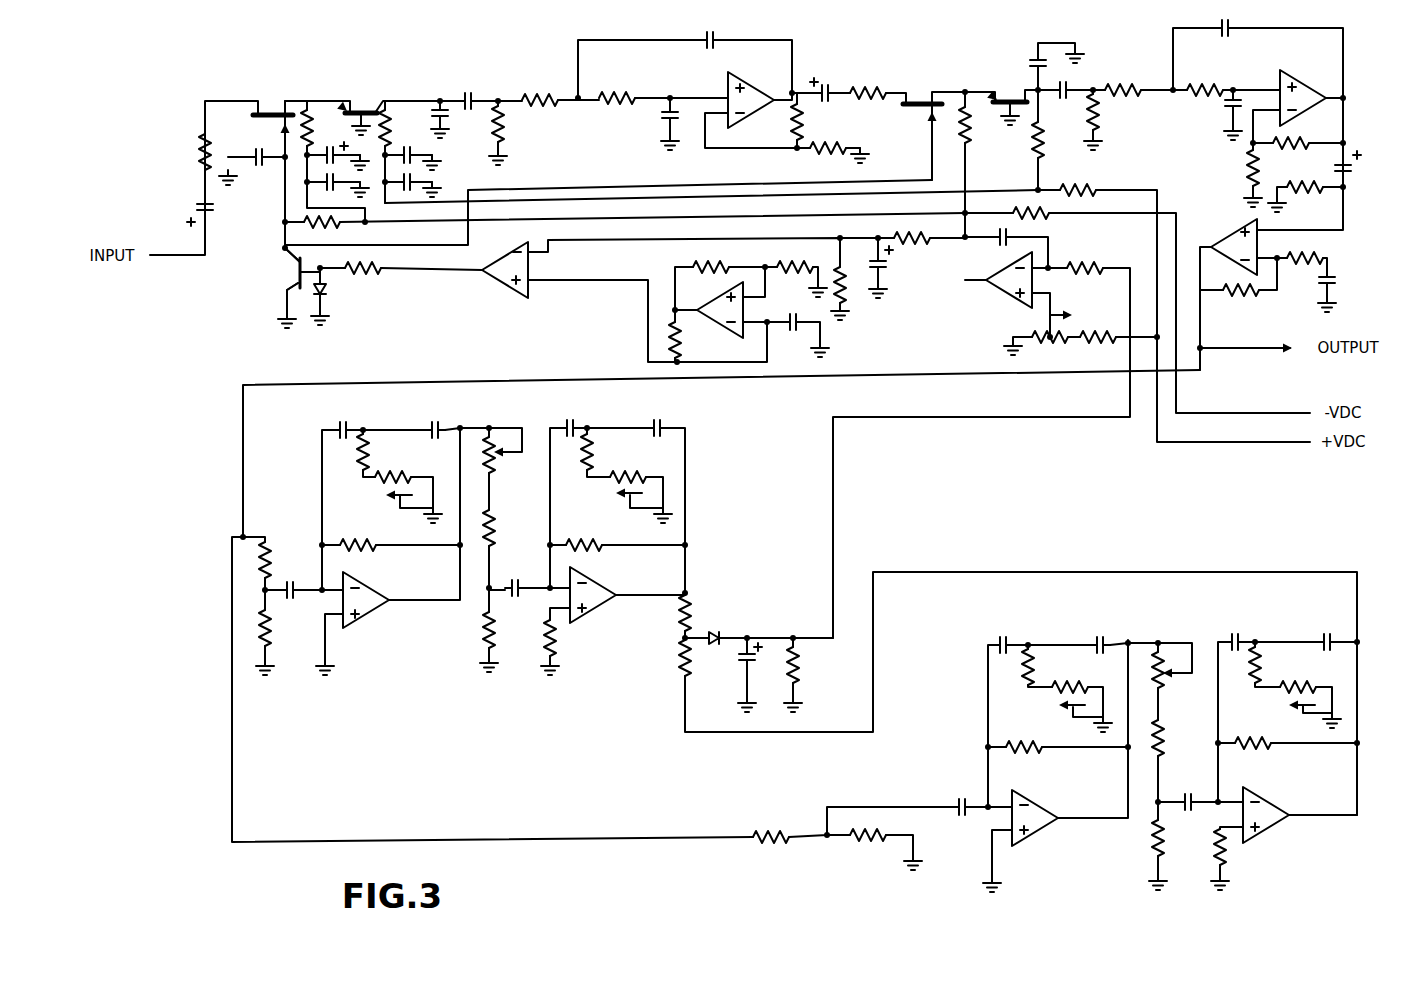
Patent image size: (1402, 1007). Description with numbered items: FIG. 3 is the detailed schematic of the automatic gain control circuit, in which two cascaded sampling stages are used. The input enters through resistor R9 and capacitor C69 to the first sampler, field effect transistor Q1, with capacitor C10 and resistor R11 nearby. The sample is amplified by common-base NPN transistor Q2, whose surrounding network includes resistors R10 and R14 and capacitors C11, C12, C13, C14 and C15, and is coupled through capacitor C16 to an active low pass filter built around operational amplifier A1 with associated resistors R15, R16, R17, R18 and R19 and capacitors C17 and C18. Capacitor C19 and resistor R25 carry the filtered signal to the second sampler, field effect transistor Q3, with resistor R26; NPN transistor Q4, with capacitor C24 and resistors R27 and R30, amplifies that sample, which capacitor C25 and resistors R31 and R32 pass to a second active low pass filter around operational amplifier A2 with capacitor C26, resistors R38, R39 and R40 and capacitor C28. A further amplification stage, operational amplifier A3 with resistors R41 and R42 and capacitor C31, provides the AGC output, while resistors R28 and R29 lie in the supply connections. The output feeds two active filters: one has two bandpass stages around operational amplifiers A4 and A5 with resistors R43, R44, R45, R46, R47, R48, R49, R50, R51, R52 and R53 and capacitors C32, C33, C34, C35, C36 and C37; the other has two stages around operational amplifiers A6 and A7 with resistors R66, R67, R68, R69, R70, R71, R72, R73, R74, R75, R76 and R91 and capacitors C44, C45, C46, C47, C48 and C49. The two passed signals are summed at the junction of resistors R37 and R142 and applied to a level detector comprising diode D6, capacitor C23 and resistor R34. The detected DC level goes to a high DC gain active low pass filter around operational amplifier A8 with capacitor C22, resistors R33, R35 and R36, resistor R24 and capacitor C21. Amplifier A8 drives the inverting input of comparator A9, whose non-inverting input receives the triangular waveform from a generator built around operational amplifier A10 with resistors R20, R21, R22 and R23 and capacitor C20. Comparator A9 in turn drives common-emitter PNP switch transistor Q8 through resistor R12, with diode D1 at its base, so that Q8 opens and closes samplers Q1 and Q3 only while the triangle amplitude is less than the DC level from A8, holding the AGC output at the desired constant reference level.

The resistor R9 is at (189, 149).
The capacitor C69 is at (187, 204).
The capacitor C10 is at (253, 146).
The field effect transistor Q1 is at (273, 101).
The resistor R10 is at (318, 126).
The capacitor C11 is at (333, 145).
The capacitor C12 is at (326, 191).
The NPN transistor Q2 is at (357, 93).
The resistor R14 is at (399, 126).
The capacitor C13 is at (410, 145).
The capacitor C14 is at (401, 195).
The capacitor C15 is at (455, 121).
The capacitor C16 is at (479, 87).
The resistor R15 is at (517, 124).
The resistor R16 is at (544, 86).
The resistor R17 is at (617, 85).
The capacitor C18 is at (726, 32).
The capacitor C17 is at (952, 82).
The operational amplifier A1 is at (751, 92).
The resistor R18 is at (821, 122).
The resistor R19 is at (806, 158).
The capacitor C19 is at (827, 79).
The resistor R25 is at (875, 77).
The field effect transistor Q3 is at (922, 92).
The resistor R26 is at (952, 132).
The NPN transistor Q4 is at (1007, 83).
The capacitor C24 is at (1021, 53).
The capacitor C25 is at (1084, 73).
The resistor R27 is at (1054, 130).
The resistor R30 is at (791, 290).
The resistor R31 is at (1129, 76).
The resistor R32 is at (1205, 76).
The capacitor C26 is at (1208, 110).
The operational amplifier A2 is at (1303, 89).
The resistor R38 is at (1309, 132).
The resistor R39 is at (1281, 168).
The capacitor C28 is at (1365, 170).
The resistor R40 is at (1314, 198).
The operational amplifier A3 is at (1230, 242).
The resistor R41 is at (1334, 250).
The capacitor C31 is at (1357, 275).
The resistor R42 is at (1252, 300).
The resistor R28 is at (1092, 181).
The resistor R29 is at (1059, 223).
The resistor R11 is at (330, 232).
The PNP transistor switch Q8 is at (286, 269).
The resistor R12 is at (376, 278).
The diode D1 is at (338, 297).
The operational amplifier A9 is at (502, 274).
The operational amplifier A10 is at (706, 306).
The resistor R20 is at (685, 257).
The resistor R21 is at (773, 255).
The resistor R22 is at (692, 340).
The capacitor C20 is at (788, 337).
The resistor R23 is at (856, 295).
The capacitor C21 is at (895, 273).
The resistor R24 is at (922, 249).
The capacitor C22 is at (988, 249).
The operational amplifier A8 is at (1004, 286).
The resistor R33 is at (1095, 257).
The resistor R35 is at (1054, 339).
The resistor R36 is at (1098, 322).
The resistor R43 is at (279, 551).
The resistor R44 is at (249, 633).
The capacitor C32 is at (297, 603).
The operational amplifier A4 is at (370, 595).
The resistor R47 is at (358, 531).
The capacitor C33 is at (347, 416).
The capacitor C34 is at (441, 416).
The resistor R45 is at (342, 456).
The resistor R46 is at (393, 471).
The resistor R48 is at (502, 520).
The capacitor C35 is at (516, 573).
The resistor R49 is at (466, 630).
The operational amplifier A5 is at (594, 589).
The resistor R53 is at (566, 640).
The resistor R52 is at (581, 531).
The capacitor C36 is at (559, 414).
The resistor R50 is at (606, 452).
The resistor R51 is at (637, 468).
The capacitor C37 is at (667, 413).
The resistor R37 is at (705, 604).
The resistor R142 is at (660, 669).
The diode D6 is at (727, 622).
The capacitor C23 is at (758, 667).
The resistor R34 is at (814, 664).
The resistor R66 is at (760, 851).
The resistor R67 is at (863, 854).
The capacitor C44 is at (946, 794).
The operational amplifier A6 is at (1039, 819).
The resistor R70 is at (1026, 736).
The capacitor C45 is at (992, 630).
The capacitor C46 is at (1110, 630).
The resistor R68 is at (1011, 672).
The resistor R69 is at (1069, 682).
The resistor R91 is at (1148, 681).
The resistor R71 is at (1174, 738).
The capacitor C47 is at (1193, 786).
The resistor R72 is at (1140, 839).
The operational amplifier A7 is at (1277, 818).
The resistor R76 is at (1240, 857).
The resistor R75 is at (1253, 732).
The capacitor C48 is at (1241, 626).
The capacitor C49 is at (1321, 624).
The resistor R73 is at (1274, 662).
The resistor R74 is at (1314, 683).